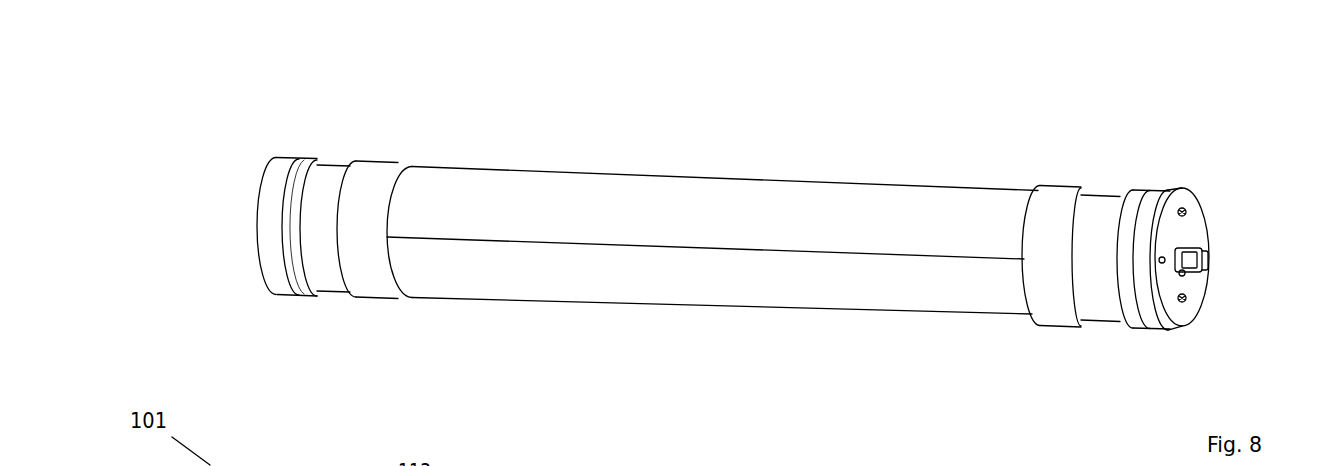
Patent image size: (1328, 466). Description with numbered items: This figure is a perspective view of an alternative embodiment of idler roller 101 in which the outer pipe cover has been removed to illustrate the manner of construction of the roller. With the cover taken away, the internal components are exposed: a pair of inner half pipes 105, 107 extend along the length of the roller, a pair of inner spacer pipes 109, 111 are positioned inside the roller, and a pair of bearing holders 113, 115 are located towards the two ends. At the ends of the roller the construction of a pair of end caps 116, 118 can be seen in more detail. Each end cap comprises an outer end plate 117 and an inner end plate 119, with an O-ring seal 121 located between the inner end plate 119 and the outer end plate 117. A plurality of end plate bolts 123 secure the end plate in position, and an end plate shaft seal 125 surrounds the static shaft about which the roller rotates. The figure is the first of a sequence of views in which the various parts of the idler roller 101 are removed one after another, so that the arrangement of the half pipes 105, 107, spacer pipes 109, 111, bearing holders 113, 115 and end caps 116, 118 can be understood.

The idler roller 101 is at (218, 132).
The inner half pipe 105 is at (907, 200).
The inner half pipe 107 is at (695, 293).
The inner spacer pipe 109 is at (335, 182).
The inner spacer pipe 111 is at (1118, 198).
The bearing holder 113 is at (387, 170).
The bearing holder 115 is at (1078, 192).
The end cap 116 is at (250, 277).
The outer end plate 117 is at (1203, 227).
The end cap 118 is at (1223, 267).
The inner end plate 119 is at (1120, 267).
The O-ring seal 121 is at (1132, 297).
The end plate bolts 123 is at (1182, 212).
The end plate shaft seal 125 is at (1183, 273).